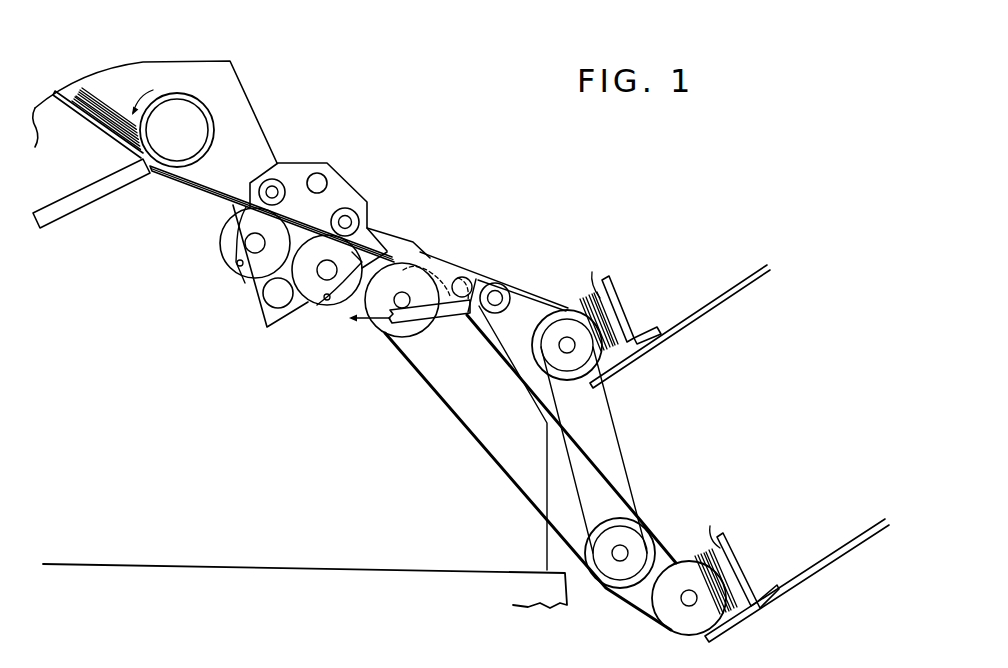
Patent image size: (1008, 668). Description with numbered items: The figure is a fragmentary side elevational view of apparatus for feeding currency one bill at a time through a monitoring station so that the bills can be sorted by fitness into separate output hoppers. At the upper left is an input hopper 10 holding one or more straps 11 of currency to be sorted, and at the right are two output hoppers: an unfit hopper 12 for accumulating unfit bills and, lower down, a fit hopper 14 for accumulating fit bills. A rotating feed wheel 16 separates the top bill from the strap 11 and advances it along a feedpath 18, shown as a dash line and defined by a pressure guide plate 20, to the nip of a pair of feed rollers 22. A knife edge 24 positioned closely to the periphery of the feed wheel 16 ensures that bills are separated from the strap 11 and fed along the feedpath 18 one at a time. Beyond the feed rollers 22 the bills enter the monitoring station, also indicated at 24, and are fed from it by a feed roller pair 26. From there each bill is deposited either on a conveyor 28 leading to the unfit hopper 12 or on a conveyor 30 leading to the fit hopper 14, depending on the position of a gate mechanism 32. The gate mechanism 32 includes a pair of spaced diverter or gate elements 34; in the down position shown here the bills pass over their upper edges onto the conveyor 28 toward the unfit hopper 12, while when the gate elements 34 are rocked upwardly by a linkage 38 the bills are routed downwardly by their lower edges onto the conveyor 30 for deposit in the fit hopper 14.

The input hopper 10 is at (129, 66).
The strap of currency 11 is at (71, 97).
The unfit hopper 12 is at (644, 266).
The fit hopper 14 is at (742, 509).
The feed wheel 16 is at (214, 113).
The feedpath 18 is at (207, 186).
The pressure guide plate 20 is at (176, 186).
The feed rollers 22 is at (277, 181).
The knife edge 24 is at (108, 198).
The feed roller pair 26 is at (360, 218).
The conveyor 28 is at (518, 292).
The conveyor 30 is at (490, 340).
The gate mechanism 32 is at (462, 262).
The gate elements 34 is at (436, 270).
The linkage 38 is at (418, 327).